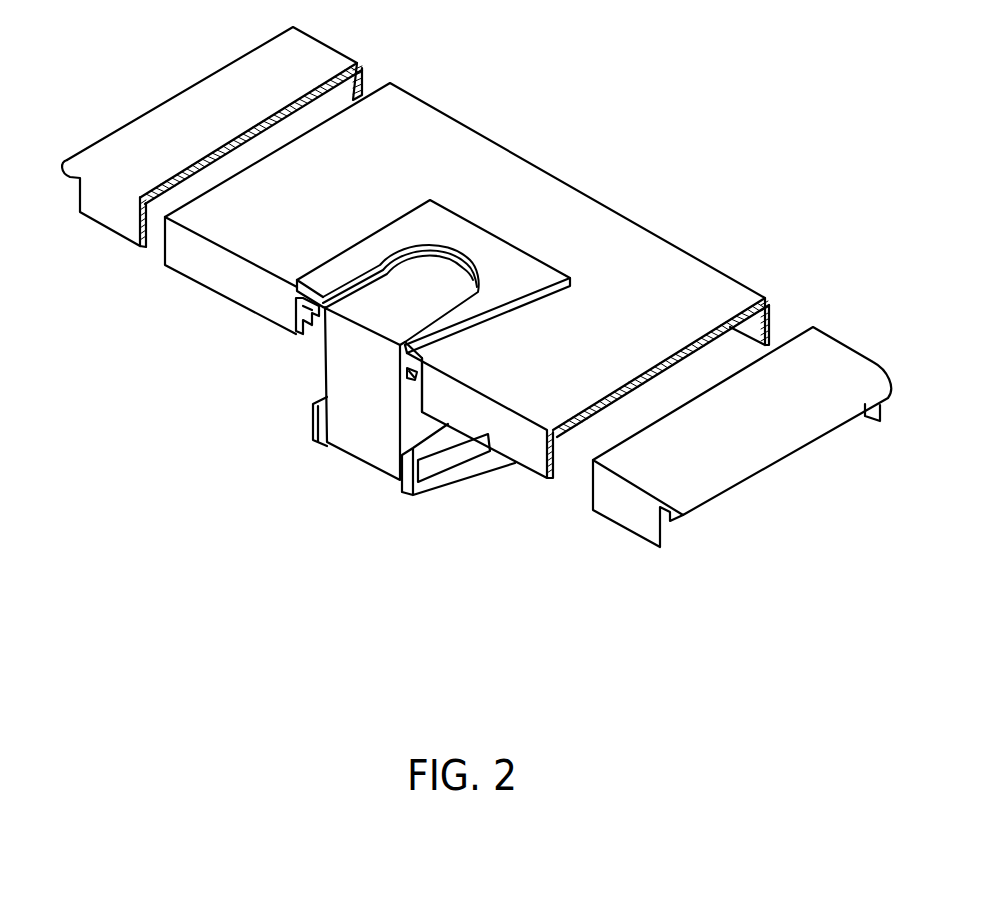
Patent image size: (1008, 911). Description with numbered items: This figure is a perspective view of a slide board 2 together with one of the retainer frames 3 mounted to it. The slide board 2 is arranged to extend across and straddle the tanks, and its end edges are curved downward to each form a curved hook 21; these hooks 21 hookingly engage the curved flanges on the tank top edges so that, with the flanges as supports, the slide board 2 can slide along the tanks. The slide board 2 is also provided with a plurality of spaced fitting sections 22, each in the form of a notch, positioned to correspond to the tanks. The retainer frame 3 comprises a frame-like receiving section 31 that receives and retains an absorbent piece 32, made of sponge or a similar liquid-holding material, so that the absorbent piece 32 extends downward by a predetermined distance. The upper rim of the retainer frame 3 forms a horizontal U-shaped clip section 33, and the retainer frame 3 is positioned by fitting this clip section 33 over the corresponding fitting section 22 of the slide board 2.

The slide board 2 is at (582, 192).
The curved hook 21 is at (67, 177).
The fitting section 22 is at (412, 374).
The retainer frame 3 is at (497, 240).
The receiving section 31 is at (450, 267).
The absorbent piece 32 is at (337, 363).
The clip section 33 is at (410, 357).